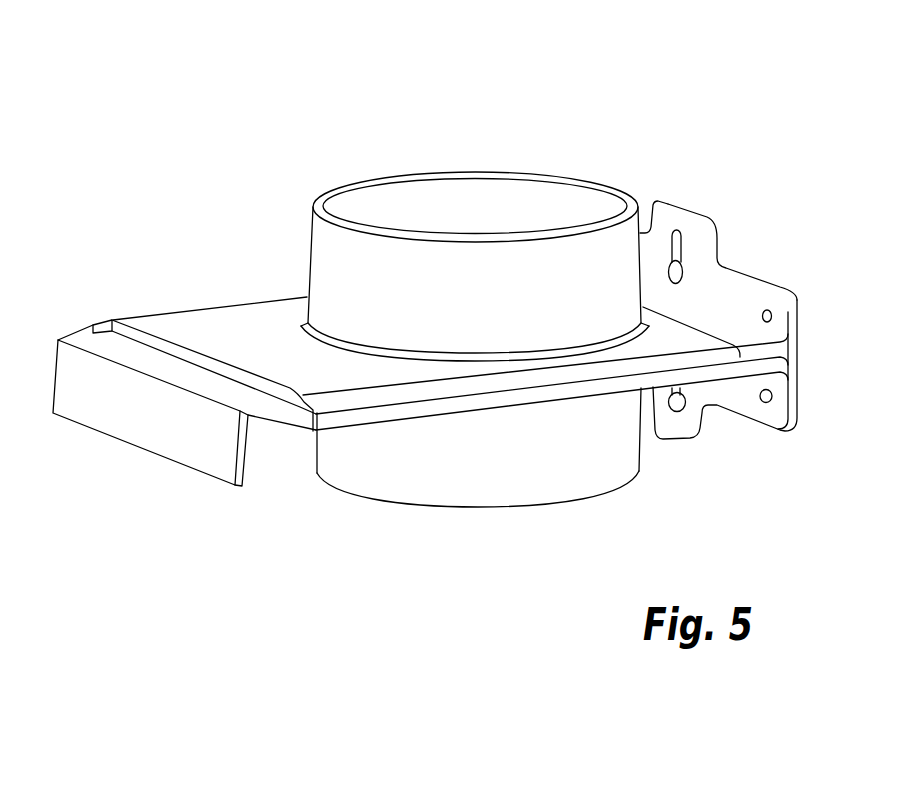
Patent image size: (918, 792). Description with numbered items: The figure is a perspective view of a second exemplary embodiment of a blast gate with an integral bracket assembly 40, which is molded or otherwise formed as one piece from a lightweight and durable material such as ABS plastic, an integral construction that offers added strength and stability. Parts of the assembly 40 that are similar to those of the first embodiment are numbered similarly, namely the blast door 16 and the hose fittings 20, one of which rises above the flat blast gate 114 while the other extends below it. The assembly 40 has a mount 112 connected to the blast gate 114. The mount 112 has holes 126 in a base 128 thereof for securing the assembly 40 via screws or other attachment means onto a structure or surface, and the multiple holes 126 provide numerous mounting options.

The blast gate with integral bracket assembly 40 is at (475, 114).
The blast door 16 is at (167, 430).
The hose fittings 20 is at (333, 249).
The mount 112 is at (654, 205).
The blast gate 114 is at (191, 322).
The holes 126 is at (678, 266).
The base 128 is at (716, 300).